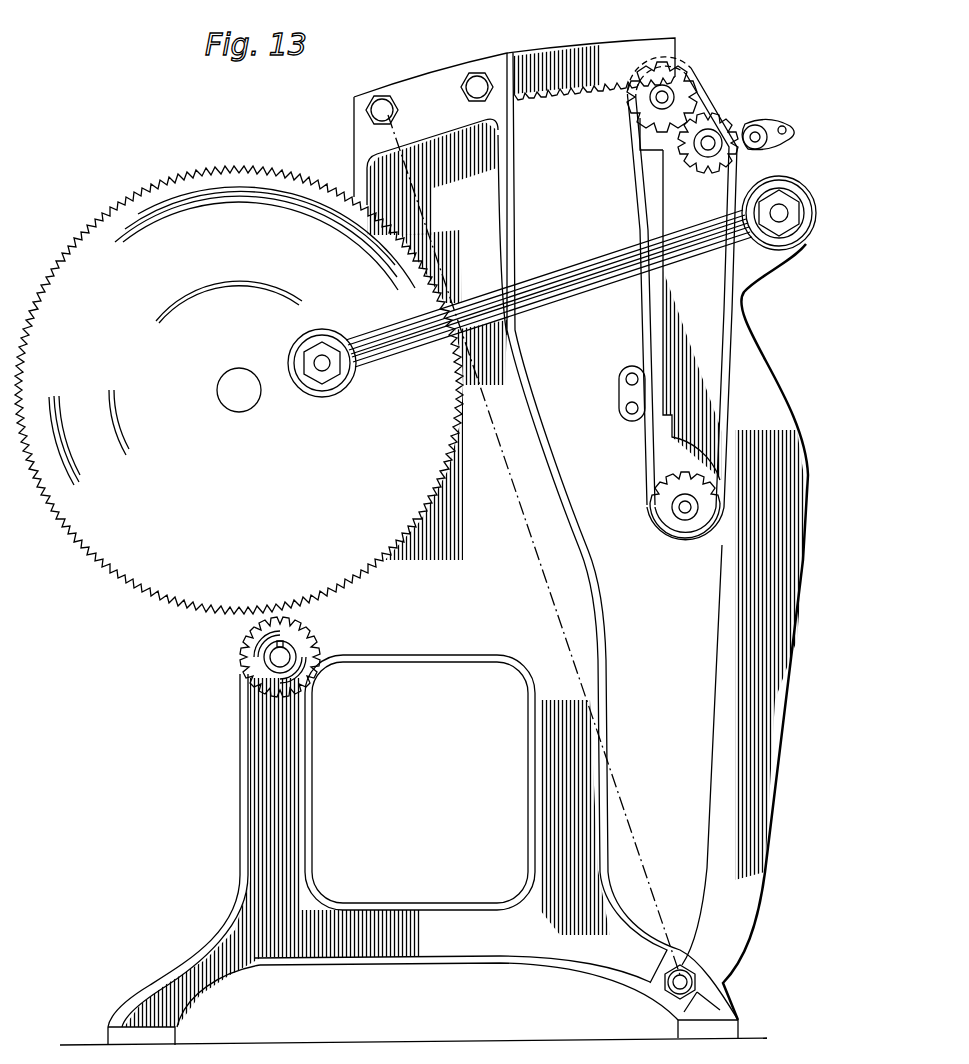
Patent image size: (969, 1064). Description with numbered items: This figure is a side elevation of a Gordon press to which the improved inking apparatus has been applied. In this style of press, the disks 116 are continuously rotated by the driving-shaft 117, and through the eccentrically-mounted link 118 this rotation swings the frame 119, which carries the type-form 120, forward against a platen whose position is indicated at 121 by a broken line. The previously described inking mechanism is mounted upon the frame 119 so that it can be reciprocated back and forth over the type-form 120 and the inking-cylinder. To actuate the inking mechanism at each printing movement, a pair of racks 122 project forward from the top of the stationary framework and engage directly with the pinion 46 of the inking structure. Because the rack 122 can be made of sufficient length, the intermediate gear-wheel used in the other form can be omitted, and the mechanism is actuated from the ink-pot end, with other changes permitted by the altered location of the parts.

The pinion 46 is at (672, 92).
The disks 116 is at (239, 390).
The driving-shaft 117 is at (268, 665).
The eccentrically-mounted link 118 is at (566, 271).
The frame 119 is at (722, 626).
The type-form 120 is at (648, 318).
The platen 121 is at (445, 257).
The racks 122 is at (596, 46).